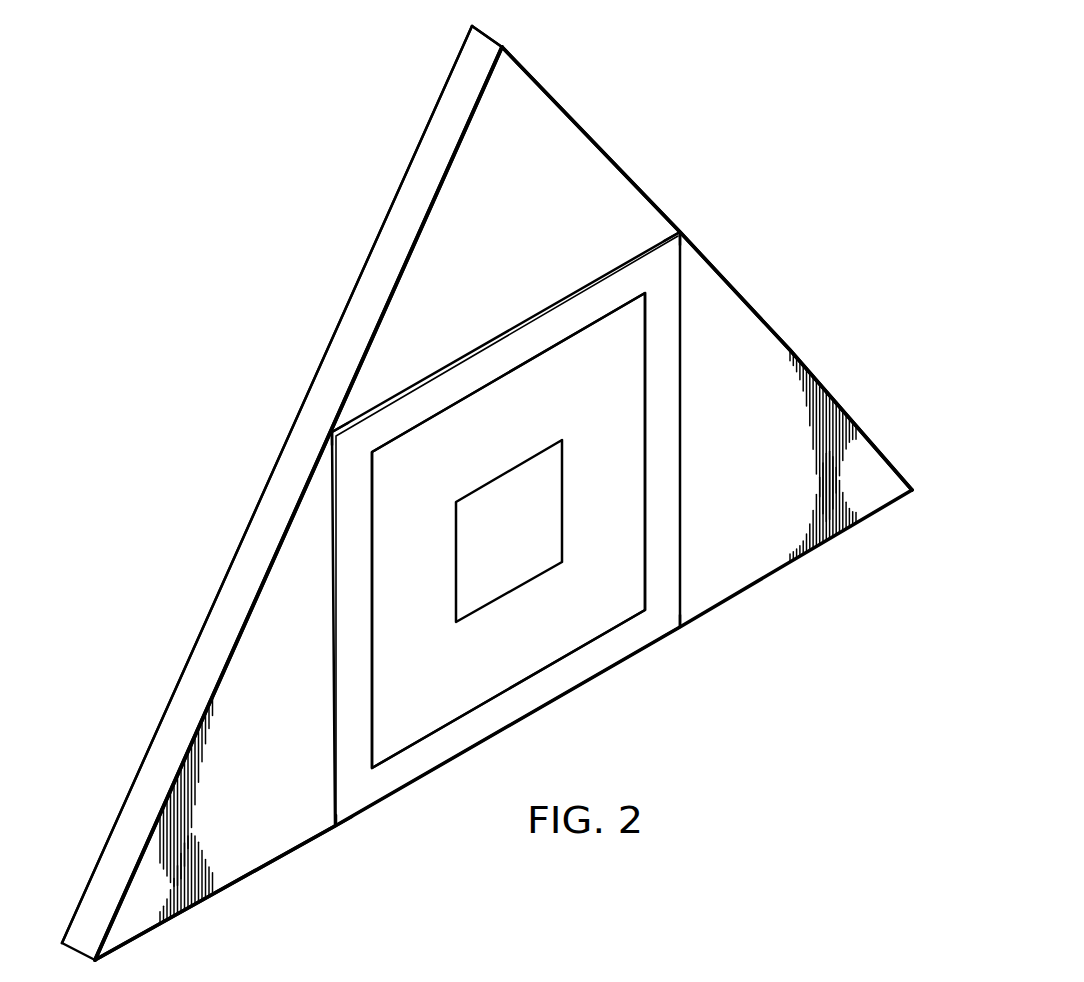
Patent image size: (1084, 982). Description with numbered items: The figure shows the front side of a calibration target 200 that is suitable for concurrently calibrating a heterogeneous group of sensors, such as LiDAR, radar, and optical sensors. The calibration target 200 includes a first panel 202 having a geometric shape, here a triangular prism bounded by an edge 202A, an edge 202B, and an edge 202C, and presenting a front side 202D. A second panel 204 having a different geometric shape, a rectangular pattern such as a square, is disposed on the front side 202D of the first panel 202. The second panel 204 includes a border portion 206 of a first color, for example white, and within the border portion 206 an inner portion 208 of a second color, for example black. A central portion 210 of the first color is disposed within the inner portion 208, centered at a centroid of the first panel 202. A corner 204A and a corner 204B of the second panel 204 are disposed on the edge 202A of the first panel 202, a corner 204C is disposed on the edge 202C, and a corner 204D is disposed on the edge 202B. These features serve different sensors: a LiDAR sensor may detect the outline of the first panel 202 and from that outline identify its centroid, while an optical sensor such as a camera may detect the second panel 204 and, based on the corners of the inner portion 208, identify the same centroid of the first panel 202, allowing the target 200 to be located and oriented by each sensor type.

The calibration target 200 is at (616, 155).
The first panel 202 is at (403, 211).
The edge 202A is at (238, 882).
The edge 202B is at (260, 588).
The edge 202C is at (874, 449).
The front side 202D is at (388, 338).
The second panel 204 is at (327, 668).
The corner 204A is at (338, 830).
The corner 204B is at (683, 633).
The corner 204C is at (680, 232).
The corner 204D is at (338, 470).
The border portion 206 is at (670, 407).
The inner portion 208 is at (636, 546).
The central portion 210 is at (509, 485).